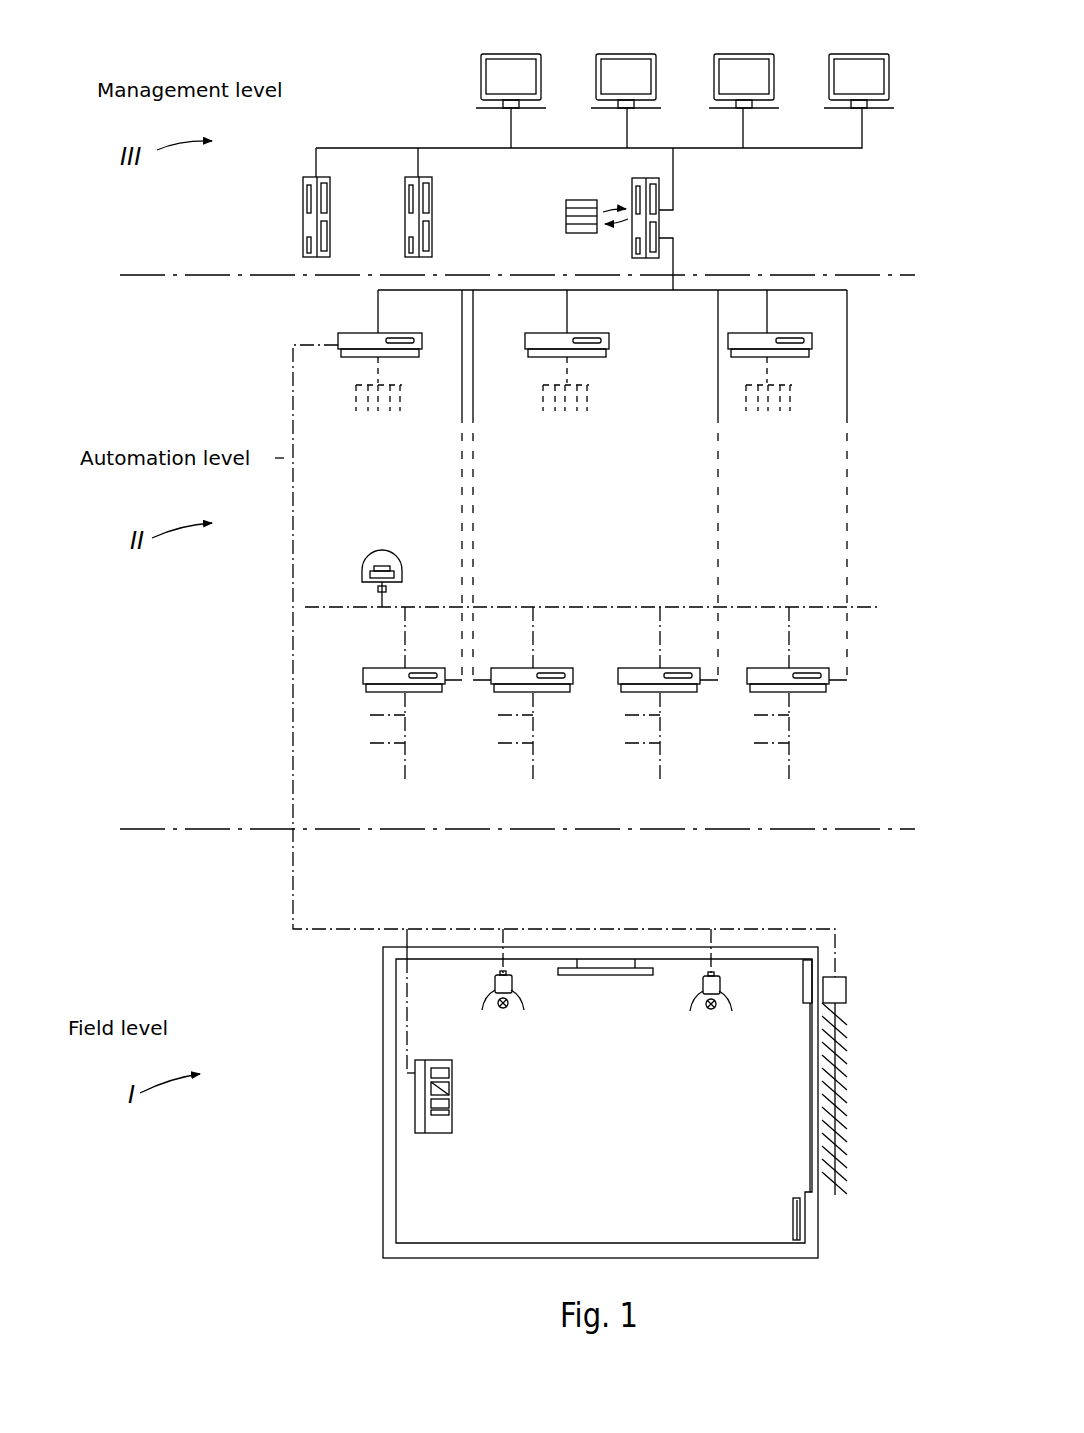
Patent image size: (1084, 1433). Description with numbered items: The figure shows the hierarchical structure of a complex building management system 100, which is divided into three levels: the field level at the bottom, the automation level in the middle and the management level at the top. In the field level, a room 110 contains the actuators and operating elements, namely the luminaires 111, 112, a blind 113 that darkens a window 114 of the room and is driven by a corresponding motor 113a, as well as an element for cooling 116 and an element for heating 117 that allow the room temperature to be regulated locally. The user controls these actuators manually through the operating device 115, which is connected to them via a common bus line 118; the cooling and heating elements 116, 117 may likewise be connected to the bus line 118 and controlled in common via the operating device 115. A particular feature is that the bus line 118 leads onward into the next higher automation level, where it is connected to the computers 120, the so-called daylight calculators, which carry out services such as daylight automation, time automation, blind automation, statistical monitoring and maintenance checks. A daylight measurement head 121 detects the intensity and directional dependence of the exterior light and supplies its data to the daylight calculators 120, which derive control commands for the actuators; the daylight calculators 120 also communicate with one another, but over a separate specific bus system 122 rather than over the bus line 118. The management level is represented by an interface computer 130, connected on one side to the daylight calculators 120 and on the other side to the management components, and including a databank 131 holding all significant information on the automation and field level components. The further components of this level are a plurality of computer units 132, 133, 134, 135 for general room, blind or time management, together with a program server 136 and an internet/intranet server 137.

The building management system 100 is at (218, 1252).
The room 110 is at (412, 1205).
The luminaire 111 is at (485, 1000).
The luminaire 112 is at (735, 1000).
The blind 113 is at (845, 1090).
The motor 113a is at (846, 988).
The window 114 is at (811, 1097).
The operating device 115 is at (455, 1090).
The element for cooling 116 is at (600, 975).
The element for heating 117 is at (793, 1215).
The bus line 118 is at (292, 568).
The computer (daylight calculator) 120 is at (395, 333).
The daylight measurement head 121 is at (390, 560).
The bus system 122 is at (585, 607).
The interface computer 130 is at (659, 229).
The databank 131 is at (580, 200).
The computer unit 132 is at (515, 54).
The computer unit 133 is at (630, 54).
The computer unit 134 is at (747, 54).
The computer unit 135 is at (865, 54).
The program server 136 is at (432, 205).
The internet/intranet server 137 is at (303, 221).